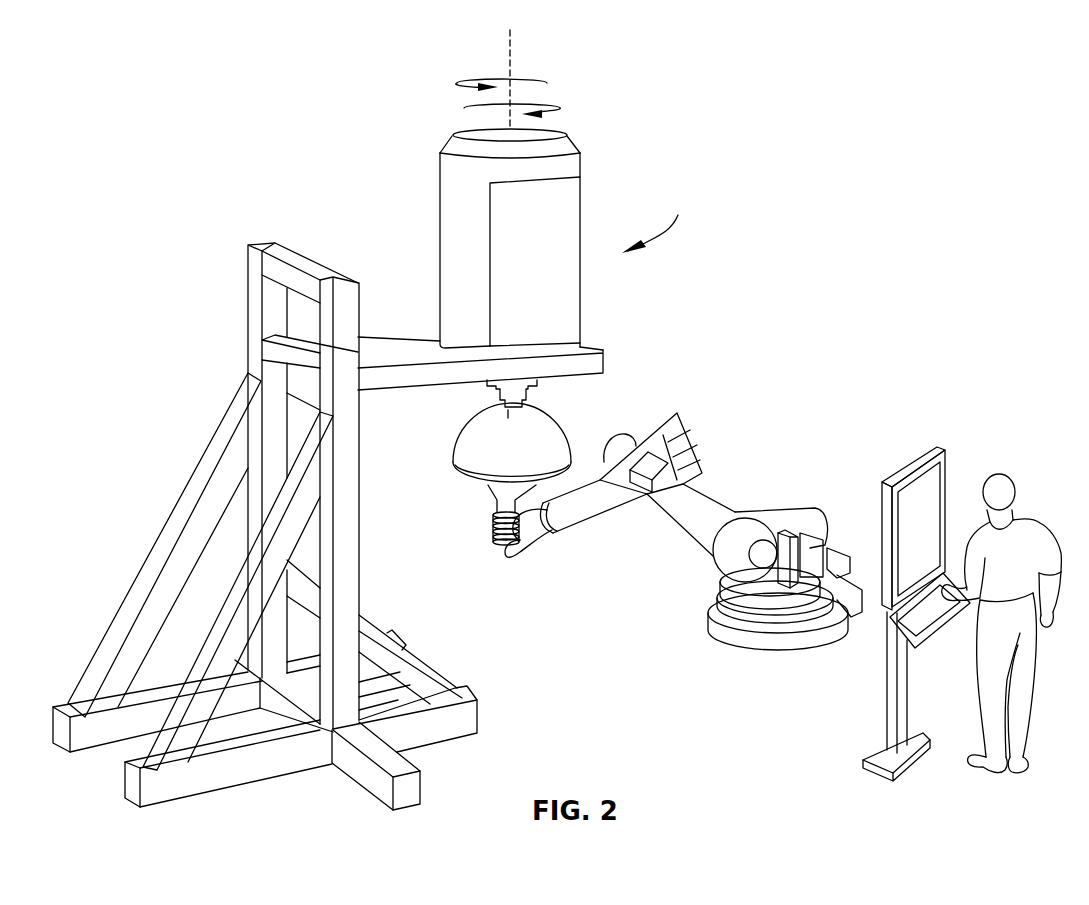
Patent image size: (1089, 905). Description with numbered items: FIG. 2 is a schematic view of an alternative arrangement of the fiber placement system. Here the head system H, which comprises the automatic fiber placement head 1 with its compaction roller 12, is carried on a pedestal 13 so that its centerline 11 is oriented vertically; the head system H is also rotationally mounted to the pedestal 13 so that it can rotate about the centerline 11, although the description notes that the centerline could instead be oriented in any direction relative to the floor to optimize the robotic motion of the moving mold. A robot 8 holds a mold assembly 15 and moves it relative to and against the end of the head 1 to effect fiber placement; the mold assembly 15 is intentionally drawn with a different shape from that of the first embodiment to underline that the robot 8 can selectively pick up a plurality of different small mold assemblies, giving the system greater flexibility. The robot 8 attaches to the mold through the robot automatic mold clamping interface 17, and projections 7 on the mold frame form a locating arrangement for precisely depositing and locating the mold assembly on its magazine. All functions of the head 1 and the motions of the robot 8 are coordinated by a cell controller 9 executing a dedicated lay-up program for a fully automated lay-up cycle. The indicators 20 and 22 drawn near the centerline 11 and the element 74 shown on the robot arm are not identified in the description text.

The automatic fiber placement head 1 is at (538, 382).
The projections 7 is at (500, 511).
The robot 8 is at (743, 512).
The cell controller 9 is at (945, 447).
The centerline 11 is at (512, 46).
The compaction roller 12 is at (488, 412).
The pedestal 13 is at (246, 298).
The mold assembly 15 is at (467, 478).
The robot automatic mold clamping interface 17 is at (495, 543).
The rotation direction 20 is at (557, 108).
The rotation direction 22 is at (465, 82).
The gripper 74 is at (567, 430).
The head system H is at (660, 220).